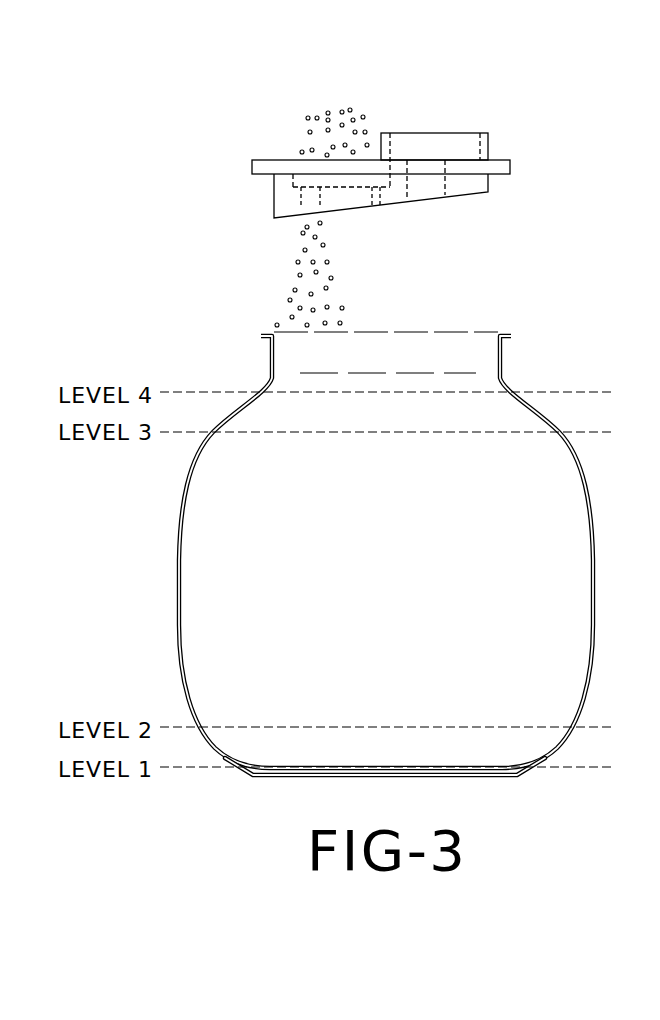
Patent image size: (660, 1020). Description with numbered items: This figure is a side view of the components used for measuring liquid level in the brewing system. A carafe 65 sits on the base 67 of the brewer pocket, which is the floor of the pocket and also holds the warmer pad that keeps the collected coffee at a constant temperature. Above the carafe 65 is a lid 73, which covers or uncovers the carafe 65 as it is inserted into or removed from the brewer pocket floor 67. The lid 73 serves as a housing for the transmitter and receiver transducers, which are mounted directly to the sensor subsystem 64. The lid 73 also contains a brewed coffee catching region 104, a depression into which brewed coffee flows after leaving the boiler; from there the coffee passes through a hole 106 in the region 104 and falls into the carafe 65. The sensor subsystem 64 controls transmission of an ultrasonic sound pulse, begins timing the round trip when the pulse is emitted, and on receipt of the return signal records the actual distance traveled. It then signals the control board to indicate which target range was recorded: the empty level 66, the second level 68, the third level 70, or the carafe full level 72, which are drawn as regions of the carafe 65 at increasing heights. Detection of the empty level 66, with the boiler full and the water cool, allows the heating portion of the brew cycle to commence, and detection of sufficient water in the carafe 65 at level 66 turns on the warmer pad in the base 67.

The sensor subsystem 64 is at (465, 133).
The carafe 65 is at (596, 564).
The empty level 66 is at (205, 768).
The base of the brewer pocket 67 is at (475, 775).
The second level 68 is at (191, 727).
The third level 70 is at (200, 431).
The carafe full level 72 is at (203, 393).
The lid 73 is at (500, 195).
The brewed coffee catching region 104 is at (373, 160).
The hole 106 is at (307, 202).